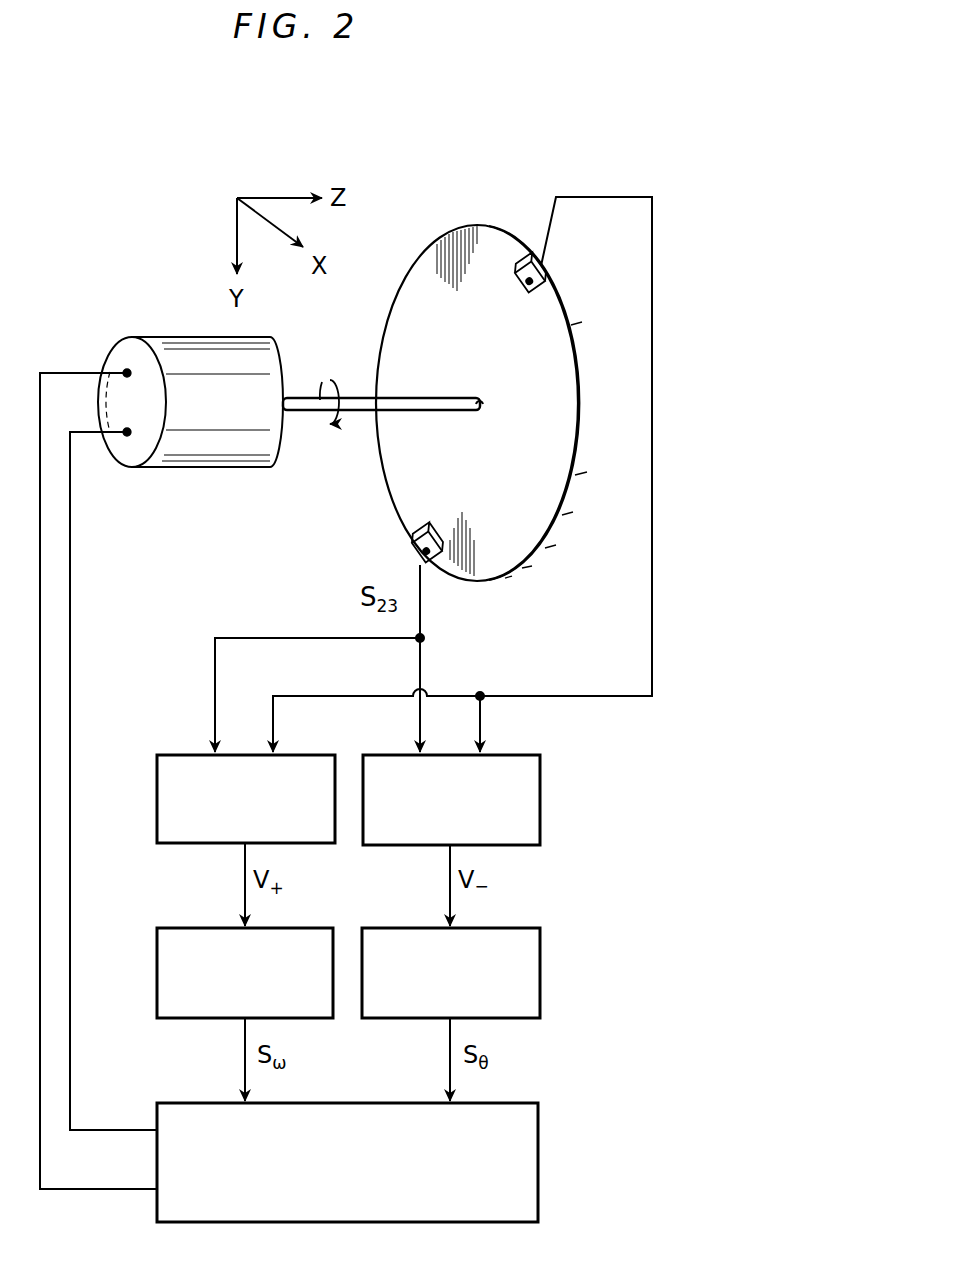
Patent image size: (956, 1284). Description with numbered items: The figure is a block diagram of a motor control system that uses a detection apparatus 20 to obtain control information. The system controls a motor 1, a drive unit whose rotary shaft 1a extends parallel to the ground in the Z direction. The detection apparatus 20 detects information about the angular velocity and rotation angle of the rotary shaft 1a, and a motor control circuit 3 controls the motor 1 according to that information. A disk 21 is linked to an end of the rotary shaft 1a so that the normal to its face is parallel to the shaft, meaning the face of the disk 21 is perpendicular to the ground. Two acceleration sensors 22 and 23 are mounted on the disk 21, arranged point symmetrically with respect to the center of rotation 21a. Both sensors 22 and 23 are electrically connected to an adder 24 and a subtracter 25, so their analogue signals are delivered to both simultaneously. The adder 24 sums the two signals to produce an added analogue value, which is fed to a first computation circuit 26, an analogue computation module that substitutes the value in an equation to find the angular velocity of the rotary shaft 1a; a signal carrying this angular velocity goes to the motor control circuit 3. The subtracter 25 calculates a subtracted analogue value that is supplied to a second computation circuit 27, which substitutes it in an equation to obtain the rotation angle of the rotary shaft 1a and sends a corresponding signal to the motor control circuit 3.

The motor 1 is at (222, 450).
The rotary shaft 1a is at (307, 414).
The detection apparatus 20 is at (660, 420).
The disk 21 is at (464, 351).
The center of rotation 21a is at (482, 408).
The acceleration sensor 22 is at (525, 268).
The acceleration sensor 23 is at (432, 562).
The adder 24 is at (157, 797).
The subtracter 25 is at (541, 784).
The first computation circuit 26 is at (157, 958).
The second computation circuit 27 is at (541, 979).
The motor control circuit 3 is at (540, 1150).